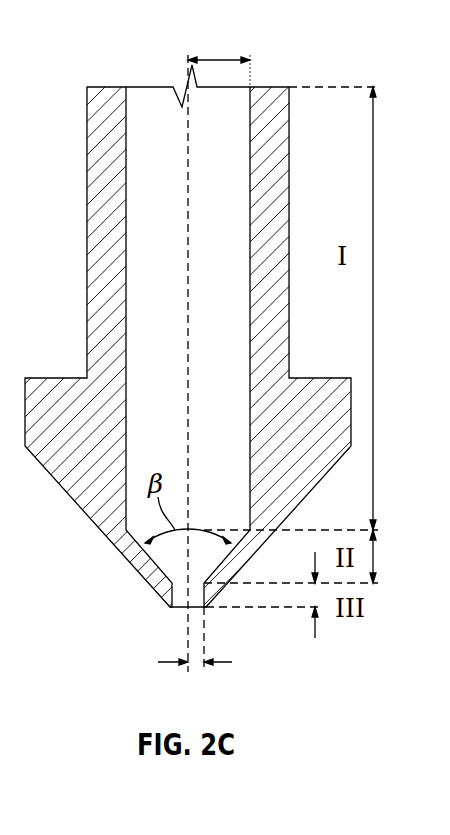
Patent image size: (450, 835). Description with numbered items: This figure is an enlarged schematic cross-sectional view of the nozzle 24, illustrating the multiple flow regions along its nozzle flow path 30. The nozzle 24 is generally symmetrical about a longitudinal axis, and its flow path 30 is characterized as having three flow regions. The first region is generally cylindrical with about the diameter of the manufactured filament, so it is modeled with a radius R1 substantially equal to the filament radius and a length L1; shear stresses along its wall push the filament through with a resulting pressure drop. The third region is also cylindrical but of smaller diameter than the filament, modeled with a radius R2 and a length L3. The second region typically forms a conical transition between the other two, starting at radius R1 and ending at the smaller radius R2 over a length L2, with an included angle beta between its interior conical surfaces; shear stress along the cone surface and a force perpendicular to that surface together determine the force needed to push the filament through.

The nozzle 24 is at (118, 545).
The nozzle flow path 30 is at (163, 97).
The radius of Region I R1 is at (218, 58).
The radius of Region III R2 is at (180, 660).
The length of Region I L1 is at (373, 308).
The length of Region II L2 is at (373, 556).
The length of Region III L3 is at (315, 625).